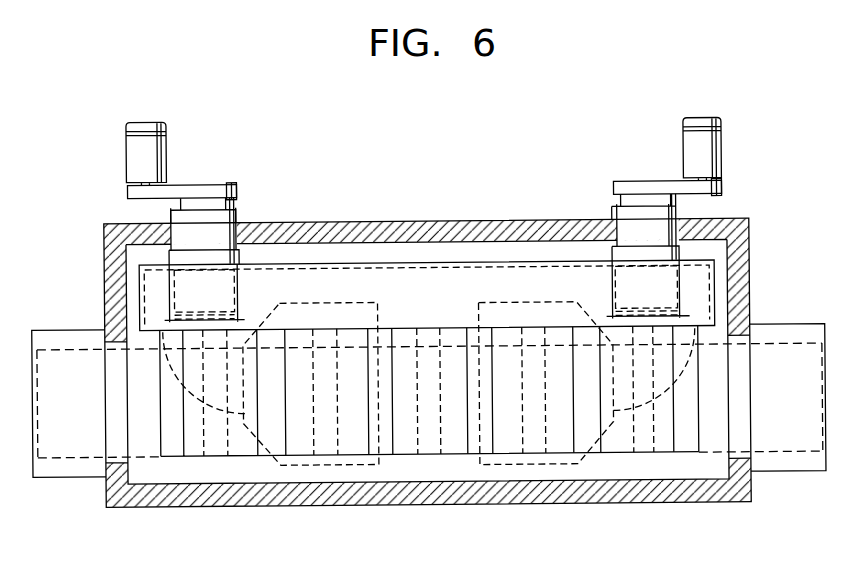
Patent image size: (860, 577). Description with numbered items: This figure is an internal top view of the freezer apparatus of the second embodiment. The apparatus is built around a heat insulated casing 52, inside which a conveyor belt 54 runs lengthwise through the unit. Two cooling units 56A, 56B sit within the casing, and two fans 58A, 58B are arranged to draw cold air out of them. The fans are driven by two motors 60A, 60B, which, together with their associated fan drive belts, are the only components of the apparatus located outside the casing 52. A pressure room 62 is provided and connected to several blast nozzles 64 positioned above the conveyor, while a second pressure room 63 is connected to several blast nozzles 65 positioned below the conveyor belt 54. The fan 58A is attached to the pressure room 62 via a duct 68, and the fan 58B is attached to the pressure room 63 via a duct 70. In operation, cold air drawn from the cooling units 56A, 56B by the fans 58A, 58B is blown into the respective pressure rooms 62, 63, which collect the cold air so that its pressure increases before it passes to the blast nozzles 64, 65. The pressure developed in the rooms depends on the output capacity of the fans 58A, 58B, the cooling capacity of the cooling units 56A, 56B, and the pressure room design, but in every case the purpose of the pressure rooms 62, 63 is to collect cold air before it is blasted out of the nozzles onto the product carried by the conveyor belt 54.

The heat insulated casing 52 is at (517, 508).
The conveyor belt 54 is at (64, 442).
The cooling unit 56A is at (355, 311).
The cooling unit 56B is at (517, 314).
The fan 58A is at (183, 233).
The fan 58B is at (646, 232).
The motor 60A is at (170, 150).
The motor 60B is at (687, 152).
The pressure room 62 is at (158, 295).
The pressure room 63 is at (753, 252).
The blast nozzles 64 is at (174, 445).
The blast nozzles 65 is at (642, 449).
The duct 68 is at (221, 280).
The duct 70 is at (666, 292).